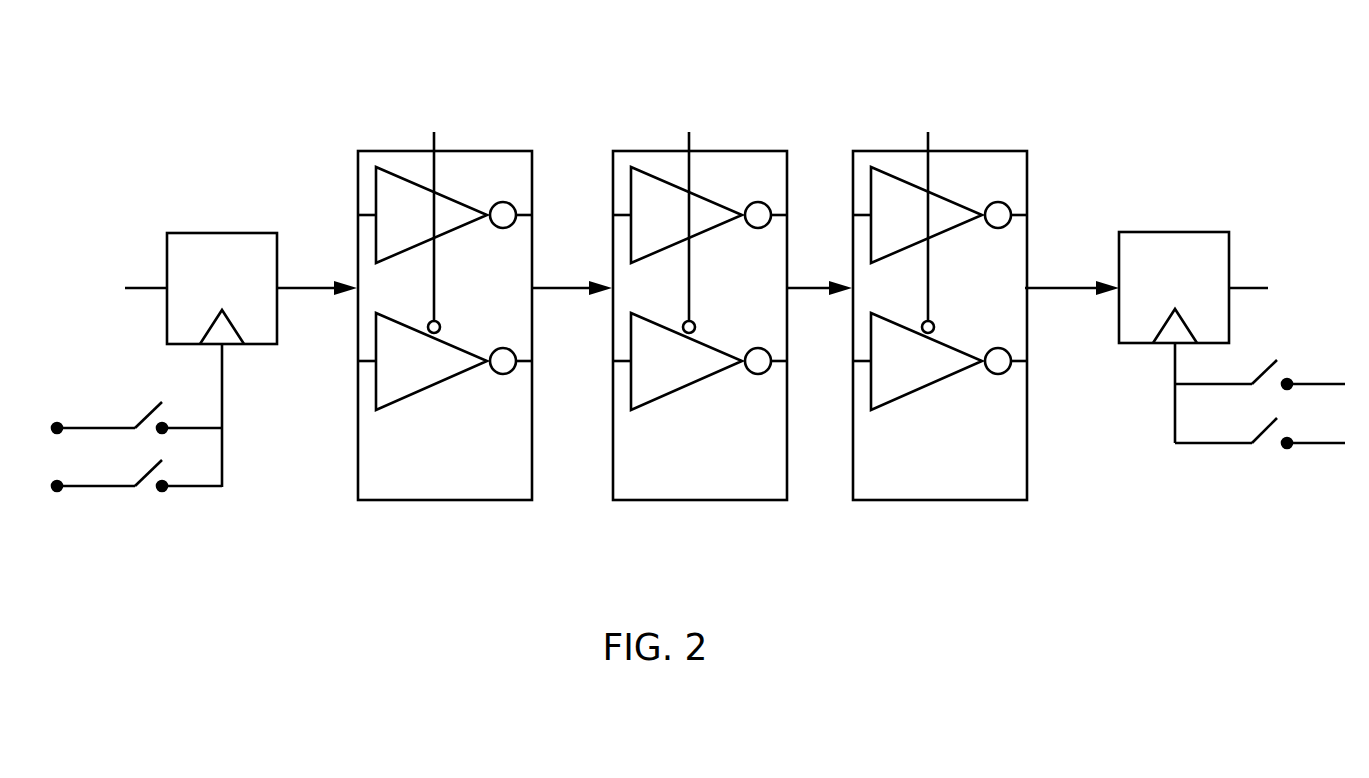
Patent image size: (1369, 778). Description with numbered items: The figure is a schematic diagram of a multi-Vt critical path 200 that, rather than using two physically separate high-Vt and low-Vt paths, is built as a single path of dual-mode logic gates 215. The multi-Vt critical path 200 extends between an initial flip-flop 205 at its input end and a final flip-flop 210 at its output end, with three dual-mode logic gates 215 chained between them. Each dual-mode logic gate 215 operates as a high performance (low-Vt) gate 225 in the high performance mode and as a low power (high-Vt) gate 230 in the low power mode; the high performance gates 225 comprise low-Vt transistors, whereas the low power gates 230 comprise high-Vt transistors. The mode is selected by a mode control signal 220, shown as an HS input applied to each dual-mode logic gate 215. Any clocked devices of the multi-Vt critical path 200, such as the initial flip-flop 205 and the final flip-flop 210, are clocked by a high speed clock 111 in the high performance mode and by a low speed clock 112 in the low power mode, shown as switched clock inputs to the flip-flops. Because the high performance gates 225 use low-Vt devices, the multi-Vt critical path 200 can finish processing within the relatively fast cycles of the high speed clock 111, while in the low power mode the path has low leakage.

The multi-Vt critical path 200 is at (1078, 143).
The initial flip-flop 205 is at (222, 233).
The final flip-flop 210 is at (1175, 232).
The high speed clock 111 is at (90, 428).
The low speed clock 112 is at (98, 486).
The dual-mode logic gate 215 is at (445, 500).
The mode control signal 220 is at (434, 100).
The high performance (low-Vt) gate 225 is at (468, 230).
The low power (high-Vt) gate 230 is at (465, 375).